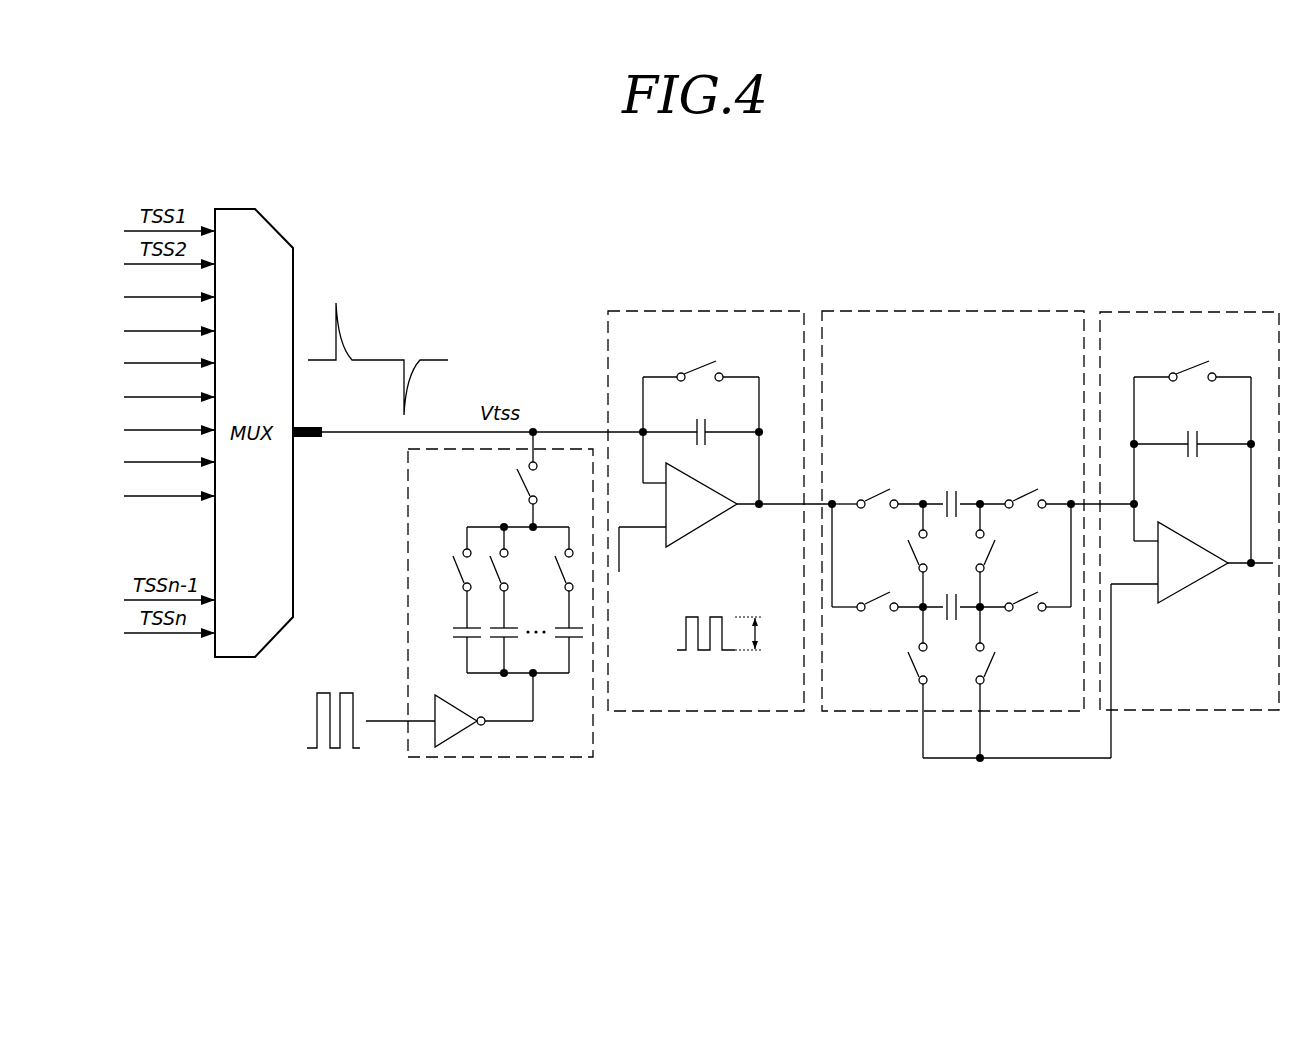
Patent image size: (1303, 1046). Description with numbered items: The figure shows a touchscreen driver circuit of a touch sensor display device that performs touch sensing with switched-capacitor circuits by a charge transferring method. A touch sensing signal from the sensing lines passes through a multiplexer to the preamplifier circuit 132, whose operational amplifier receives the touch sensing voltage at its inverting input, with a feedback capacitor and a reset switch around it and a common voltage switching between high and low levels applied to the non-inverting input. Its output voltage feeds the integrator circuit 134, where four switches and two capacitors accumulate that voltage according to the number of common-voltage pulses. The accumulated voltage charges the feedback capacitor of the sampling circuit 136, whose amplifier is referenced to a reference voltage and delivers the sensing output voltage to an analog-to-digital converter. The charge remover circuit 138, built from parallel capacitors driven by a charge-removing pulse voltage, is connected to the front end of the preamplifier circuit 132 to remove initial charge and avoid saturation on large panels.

The preamplifier circuit 132 is at (707, 711).
The integrator circuit 134 is at (865, 711).
The sampling circuit 136 is at (1189, 710).
The charge remover circuit 138 is at (500, 757).